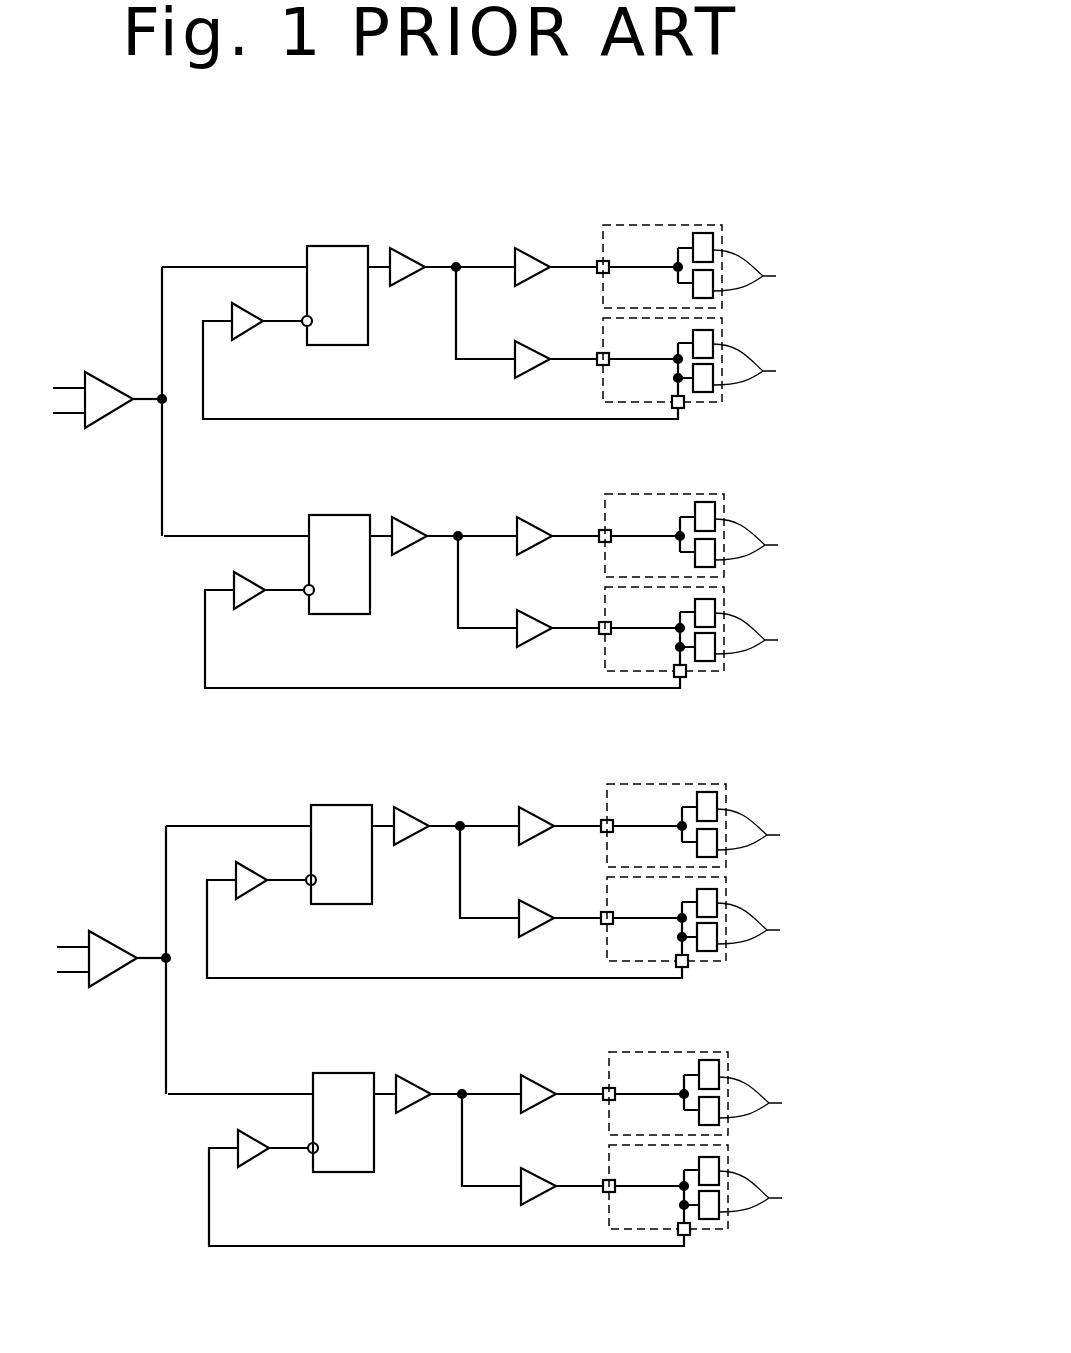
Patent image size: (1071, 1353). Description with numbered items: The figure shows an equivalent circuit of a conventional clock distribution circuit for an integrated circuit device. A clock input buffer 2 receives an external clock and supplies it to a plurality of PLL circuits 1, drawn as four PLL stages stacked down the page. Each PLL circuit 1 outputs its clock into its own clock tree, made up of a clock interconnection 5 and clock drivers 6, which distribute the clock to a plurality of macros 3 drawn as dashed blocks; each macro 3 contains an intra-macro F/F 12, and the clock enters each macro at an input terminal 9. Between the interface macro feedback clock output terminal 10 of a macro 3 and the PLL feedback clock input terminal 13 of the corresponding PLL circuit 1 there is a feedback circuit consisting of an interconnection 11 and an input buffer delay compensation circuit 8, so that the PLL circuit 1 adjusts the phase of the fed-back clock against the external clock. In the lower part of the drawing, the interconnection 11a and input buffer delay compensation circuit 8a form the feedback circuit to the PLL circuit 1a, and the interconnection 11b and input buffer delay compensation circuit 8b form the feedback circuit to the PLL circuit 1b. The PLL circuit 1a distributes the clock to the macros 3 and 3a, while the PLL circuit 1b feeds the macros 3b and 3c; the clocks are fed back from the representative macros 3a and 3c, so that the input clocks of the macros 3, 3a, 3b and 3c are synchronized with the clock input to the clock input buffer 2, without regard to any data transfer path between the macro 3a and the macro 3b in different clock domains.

The PLL circuit 1 is at (337, 246).
The PLL circuit 1a is at (341, 805).
The PLL circuit 1b is at (343, 1073).
The clock input buffer 2 is at (105, 378).
The macro 3 is at (722, 238).
The macro 3a is at (726, 890).
The macro 3b is at (728, 1065).
The macro 3c is at (728, 1158).
The clock interconnection 5 is at (498, 262).
The clock driver 6 is at (408, 250).
The input buffer delay compensation circuit 8 is at (247, 305).
The input buffer delay compensation circuit 8a is at (251, 864).
The input buffer delay compensation circuit 8b is at (253, 1132).
The clock input terminal 9 is at (606, 259).
The interface macro feedback clock output terminal 10 is at (684, 408).
The interconnection 11 is at (383, 419).
The interconnection 11a is at (387, 978).
The interconnection 11b is at (389, 1246).
The intra-macro F/F 12 is at (758, 726).
The PLL feedback clock input terminal 13 is at (303, 326).